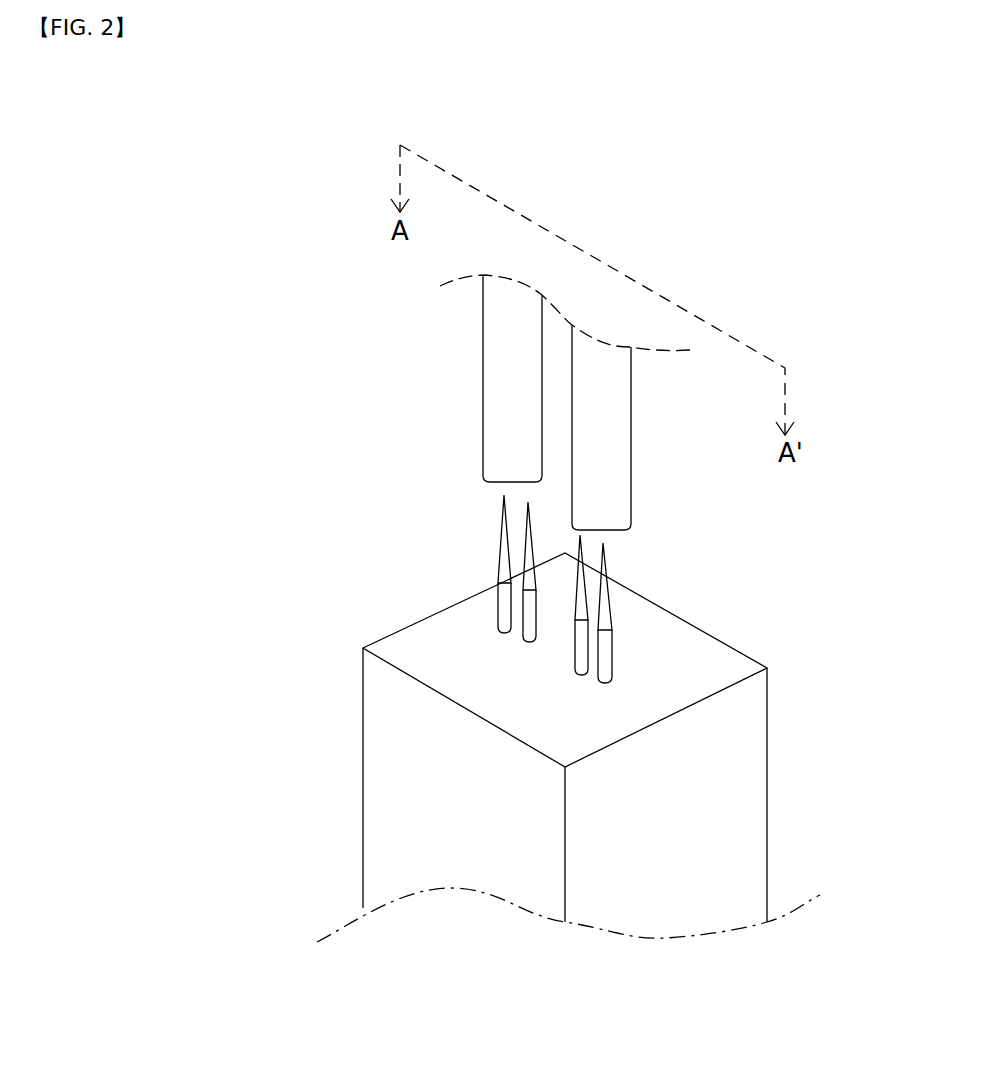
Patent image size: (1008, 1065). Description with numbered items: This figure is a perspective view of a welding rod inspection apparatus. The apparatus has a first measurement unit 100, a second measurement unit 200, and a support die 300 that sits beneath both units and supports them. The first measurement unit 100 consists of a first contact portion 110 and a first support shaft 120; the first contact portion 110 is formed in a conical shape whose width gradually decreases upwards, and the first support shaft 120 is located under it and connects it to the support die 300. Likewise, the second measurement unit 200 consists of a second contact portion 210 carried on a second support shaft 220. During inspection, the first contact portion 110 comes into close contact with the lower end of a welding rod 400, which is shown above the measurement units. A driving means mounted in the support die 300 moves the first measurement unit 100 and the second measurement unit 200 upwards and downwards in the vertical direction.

The first measurement unit 100 is at (181, 170).
The first contact portion 110 is at (668, 546).
The first support shaft 120 is at (790, 645).
The second measurement unit 200 is at (181, 382).
The second contact portion 210 is at (700, 598).
The second support shaft 220 is at (808, 725).
The support die 300 is at (747, 818).
The welding rod 400 is at (500, 395).